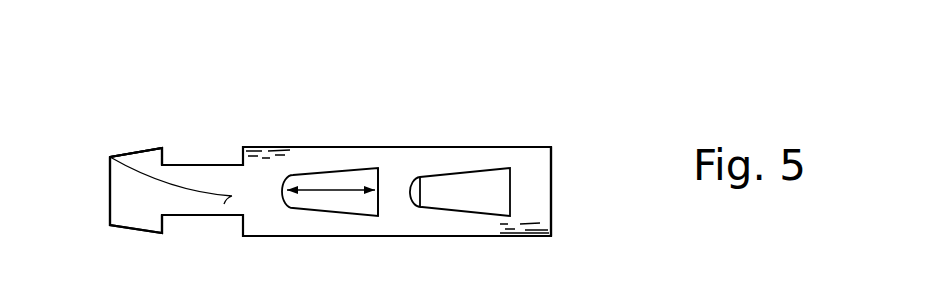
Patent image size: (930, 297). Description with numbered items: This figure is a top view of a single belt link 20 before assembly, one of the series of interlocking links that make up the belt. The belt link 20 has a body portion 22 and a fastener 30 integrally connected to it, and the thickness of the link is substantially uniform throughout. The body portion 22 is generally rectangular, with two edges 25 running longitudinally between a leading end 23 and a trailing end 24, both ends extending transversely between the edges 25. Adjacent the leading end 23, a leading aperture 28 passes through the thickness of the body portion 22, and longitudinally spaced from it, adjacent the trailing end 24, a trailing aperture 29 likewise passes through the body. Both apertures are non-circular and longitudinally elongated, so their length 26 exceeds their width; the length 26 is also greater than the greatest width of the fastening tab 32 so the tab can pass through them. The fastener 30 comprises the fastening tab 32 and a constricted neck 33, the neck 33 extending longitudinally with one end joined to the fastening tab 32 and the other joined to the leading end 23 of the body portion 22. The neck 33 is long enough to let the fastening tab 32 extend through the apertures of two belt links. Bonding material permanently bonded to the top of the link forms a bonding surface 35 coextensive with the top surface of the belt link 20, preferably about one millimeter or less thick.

The belt link 20 is at (522, 142).
The body portion 22 is at (398, 180).
The leading end 23 is at (247, 160).
The trailing end 24 is at (552, 193).
The edges 25 is at (342, 147).
The length of the apertures 26 is at (345, 185).
The leading aperture 28 is at (352, 202).
The trailing aperture 29 is at (457, 195).
The fastener 30 is at (212, 217).
The fastening tab 32 is at (125, 203).
The constricted neck 33 is at (195, 182).
The bonding surface 35 is at (110, 157).